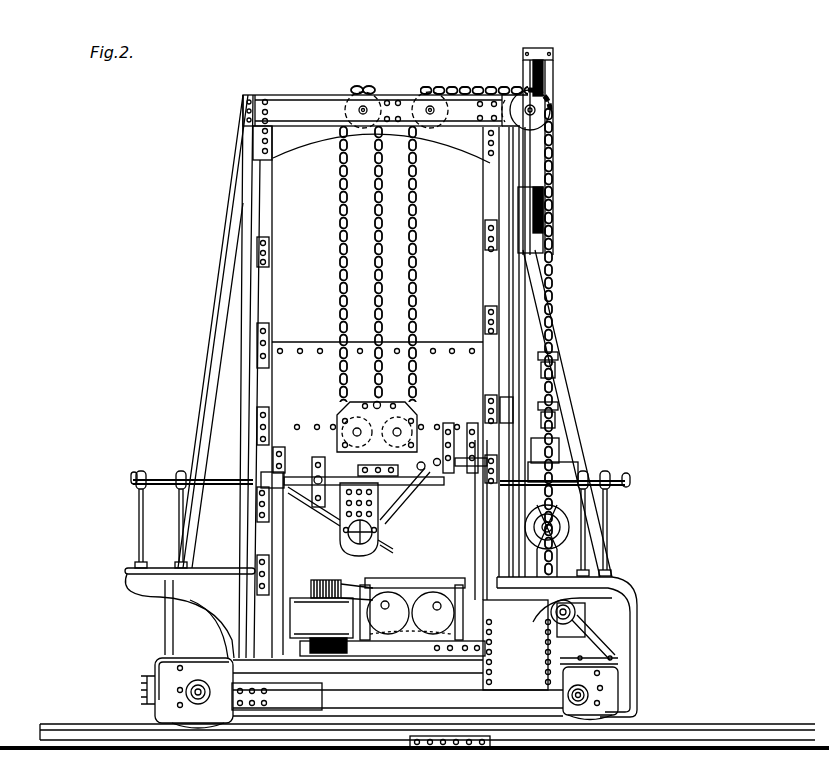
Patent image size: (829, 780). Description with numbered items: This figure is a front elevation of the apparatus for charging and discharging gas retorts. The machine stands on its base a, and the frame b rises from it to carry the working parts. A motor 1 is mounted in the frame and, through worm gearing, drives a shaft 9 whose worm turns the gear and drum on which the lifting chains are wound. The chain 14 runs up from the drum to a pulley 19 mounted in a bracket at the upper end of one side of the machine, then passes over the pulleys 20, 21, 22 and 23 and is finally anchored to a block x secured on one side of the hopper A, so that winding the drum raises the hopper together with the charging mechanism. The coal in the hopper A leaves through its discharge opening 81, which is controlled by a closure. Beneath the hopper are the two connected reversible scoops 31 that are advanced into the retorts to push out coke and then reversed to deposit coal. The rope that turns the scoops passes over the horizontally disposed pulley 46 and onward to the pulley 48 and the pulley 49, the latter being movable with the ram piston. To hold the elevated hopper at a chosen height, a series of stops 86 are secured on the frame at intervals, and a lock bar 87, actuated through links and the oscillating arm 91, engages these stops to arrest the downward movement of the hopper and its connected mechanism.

The motor 1 is at (563, 472).
The shaft 9 is at (565, 612).
The chain 14 is at (553, 191).
The pulley 19 is at (551, 112).
The pulley 20 is at (432, 128).
The pulley 21 is at (416, 421).
The pulley 22 is at (346, 421).
The pulley 23 is at (363, 92).
The reversible scoops 31 is at (428, 633).
The horizontally disposed pulley 46 is at (410, 657).
The pulley 48 is at (333, 582).
The pulley 49 is at (312, 588).
The discharge opening 81 is at (394, 551).
The stops or abutments 86 is at (270, 248).
The lock bar 87 is at (283, 473).
The oscillating arm 91 is at (372, 478).
The base a is at (187, 693).
The hopper A is at (381, 259).
The frame b is at (274, 207).
The block x is at (380, 402).